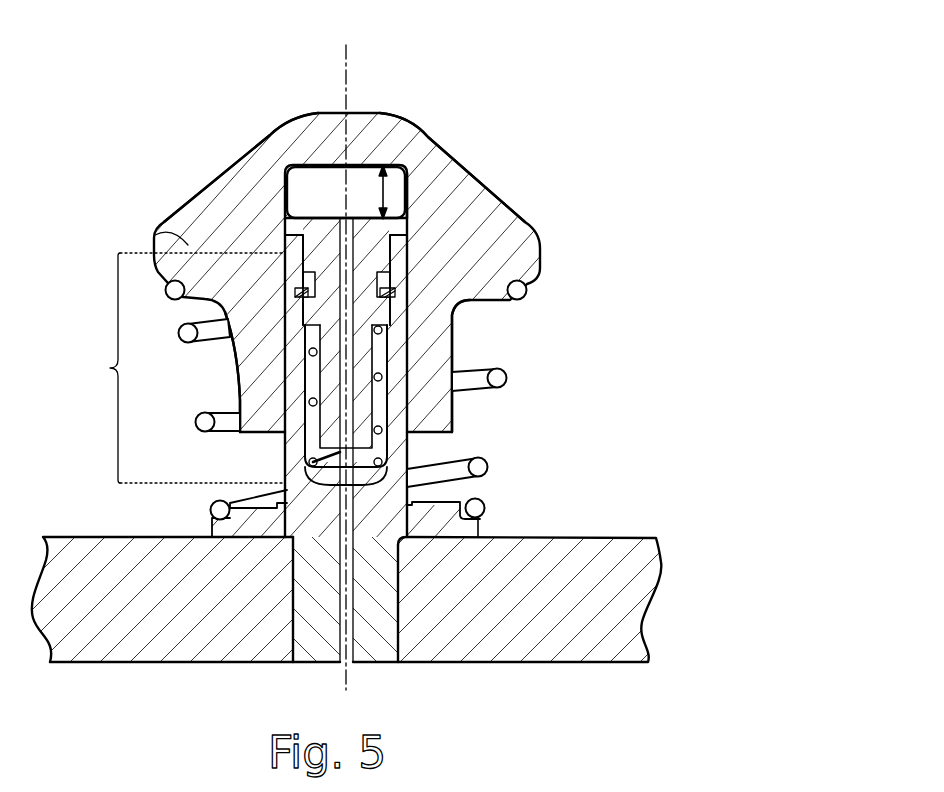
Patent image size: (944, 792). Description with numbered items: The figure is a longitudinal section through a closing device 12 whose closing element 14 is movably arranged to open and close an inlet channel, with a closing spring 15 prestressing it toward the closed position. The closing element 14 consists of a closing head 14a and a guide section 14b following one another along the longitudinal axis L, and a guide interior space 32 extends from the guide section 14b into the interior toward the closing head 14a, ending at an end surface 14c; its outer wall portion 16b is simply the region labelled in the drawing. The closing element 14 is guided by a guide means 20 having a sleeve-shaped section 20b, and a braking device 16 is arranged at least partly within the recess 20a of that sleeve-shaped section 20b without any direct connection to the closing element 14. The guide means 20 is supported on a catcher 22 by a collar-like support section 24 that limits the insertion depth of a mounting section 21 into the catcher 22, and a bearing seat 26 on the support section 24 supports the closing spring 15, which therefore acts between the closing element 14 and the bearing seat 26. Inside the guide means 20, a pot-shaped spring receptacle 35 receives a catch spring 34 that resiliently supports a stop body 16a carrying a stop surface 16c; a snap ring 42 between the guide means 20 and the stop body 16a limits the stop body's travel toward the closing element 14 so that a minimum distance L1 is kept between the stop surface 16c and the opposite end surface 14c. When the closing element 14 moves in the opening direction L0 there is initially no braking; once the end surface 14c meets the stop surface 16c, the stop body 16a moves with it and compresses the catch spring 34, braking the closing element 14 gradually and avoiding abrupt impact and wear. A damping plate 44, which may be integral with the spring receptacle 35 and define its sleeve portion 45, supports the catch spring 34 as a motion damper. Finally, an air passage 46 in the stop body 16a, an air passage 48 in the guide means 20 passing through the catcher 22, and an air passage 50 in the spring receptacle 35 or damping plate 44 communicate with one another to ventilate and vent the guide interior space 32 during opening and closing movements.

The closing device 12 is at (570, 105).
The closing element 14 is at (155, 235).
The closing head 14a is at (418, 135).
The guide section 14b is at (447, 328).
The end surface 14c is at (362, 170).
The closing spring 15 is at (499, 376).
The braking device 16 is at (307, 185).
The stop body 16a is at (390, 226).
The side wall portion 16b is at (305, 396).
The stop surface 16c is at (295, 212).
The guide means 20 is at (388, 437).
The recess 20a is at (478, 306).
The sleeve-shaped section 20b is at (108, 369).
The mounting section 21 is at (313, 653).
The catcher 22 is at (570, 652).
The support section 24 is at (240, 528).
The bearing seat 26 is at (482, 528).
The guide interior space 32 is at (395, 199).
The catch spring 34 is at (488, 468).
The spring receptacle 35 is at (350, 373).
The sleeve portion 45 is at (487, 396).
The snap ring 42 is at (388, 289).
The damping plate 44 is at (395, 485).
The air passage 46 is at (388, 402).
The air passage 48 is at (353, 662).
The air passage 50 is at (340, 472).
The longitudinal axis L is at (348, 56).
The opening direction L0 is at (345, 180).
The minimum distance L1 is at (402, 212).